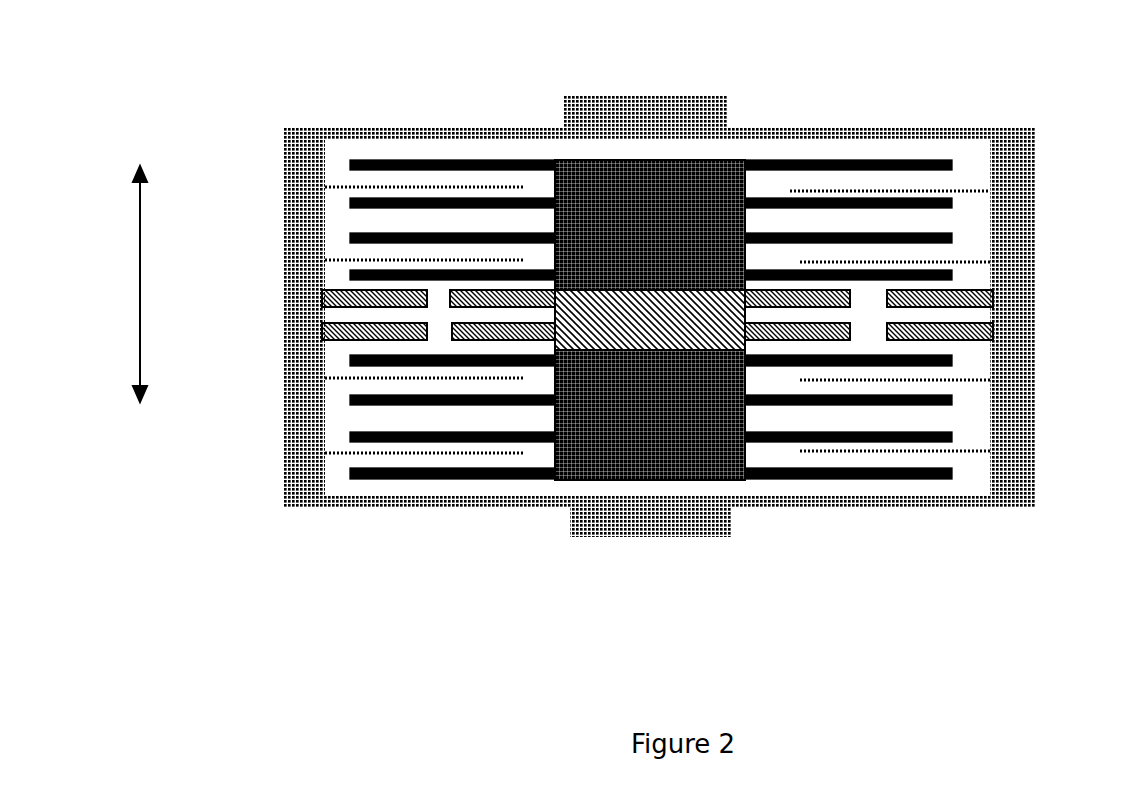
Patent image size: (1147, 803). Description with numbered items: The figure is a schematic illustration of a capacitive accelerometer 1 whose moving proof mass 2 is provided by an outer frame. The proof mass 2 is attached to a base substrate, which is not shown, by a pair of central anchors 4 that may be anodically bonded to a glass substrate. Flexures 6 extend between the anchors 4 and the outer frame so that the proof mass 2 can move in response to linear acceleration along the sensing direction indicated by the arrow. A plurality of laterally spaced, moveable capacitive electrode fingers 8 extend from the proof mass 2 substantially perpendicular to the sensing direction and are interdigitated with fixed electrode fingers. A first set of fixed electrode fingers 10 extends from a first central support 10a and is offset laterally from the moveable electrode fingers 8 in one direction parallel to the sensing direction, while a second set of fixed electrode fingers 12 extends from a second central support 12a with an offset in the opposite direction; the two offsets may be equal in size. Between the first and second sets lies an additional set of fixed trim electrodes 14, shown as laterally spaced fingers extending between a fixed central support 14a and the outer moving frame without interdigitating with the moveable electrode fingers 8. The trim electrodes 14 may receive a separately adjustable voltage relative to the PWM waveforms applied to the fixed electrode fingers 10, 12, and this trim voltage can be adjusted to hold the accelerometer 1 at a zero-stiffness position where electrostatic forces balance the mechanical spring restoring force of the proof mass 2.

The capacitive accelerometer 1 is at (982, 104).
The proof mass 2 is at (1022, 165).
The central anchors 4 is at (625, 105).
The flexures 6 is at (393, 505).
The moveable capacitive electrode fingers 8 is at (332, 180).
The first set of fixed electrode fingers 10 is at (492, 200).
The first central support 10a is at (718, 178).
The second set of fixed electrode fingers 12 is at (525, 478).
The second central support 12a is at (733, 480).
The fixed trim electrodes 14 is at (340, 290).
The fixed central support 14a is at (578, 290).